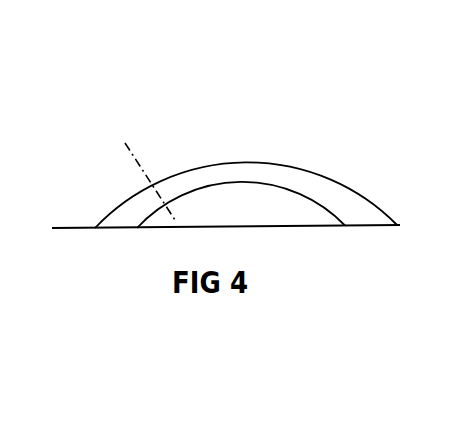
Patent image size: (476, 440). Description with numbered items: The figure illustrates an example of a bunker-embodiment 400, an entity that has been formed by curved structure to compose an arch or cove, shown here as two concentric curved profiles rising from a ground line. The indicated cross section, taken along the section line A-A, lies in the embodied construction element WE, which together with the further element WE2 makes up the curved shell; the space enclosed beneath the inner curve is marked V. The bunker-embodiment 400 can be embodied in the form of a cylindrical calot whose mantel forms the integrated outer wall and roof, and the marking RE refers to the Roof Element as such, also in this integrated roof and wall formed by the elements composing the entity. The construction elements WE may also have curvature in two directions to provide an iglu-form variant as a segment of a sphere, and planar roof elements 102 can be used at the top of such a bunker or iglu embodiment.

The bunker-embodiment 400 is at (462, 24).
The planar roof elements 102 is at (293, 123).
The construction element WE is at (270, 159).
The second winding element WE2 is at (270, 159).
The roof element RE is at (270, 159).
The volume / cavity V is at (241, 205).
The section line A-A is at (42, 62).